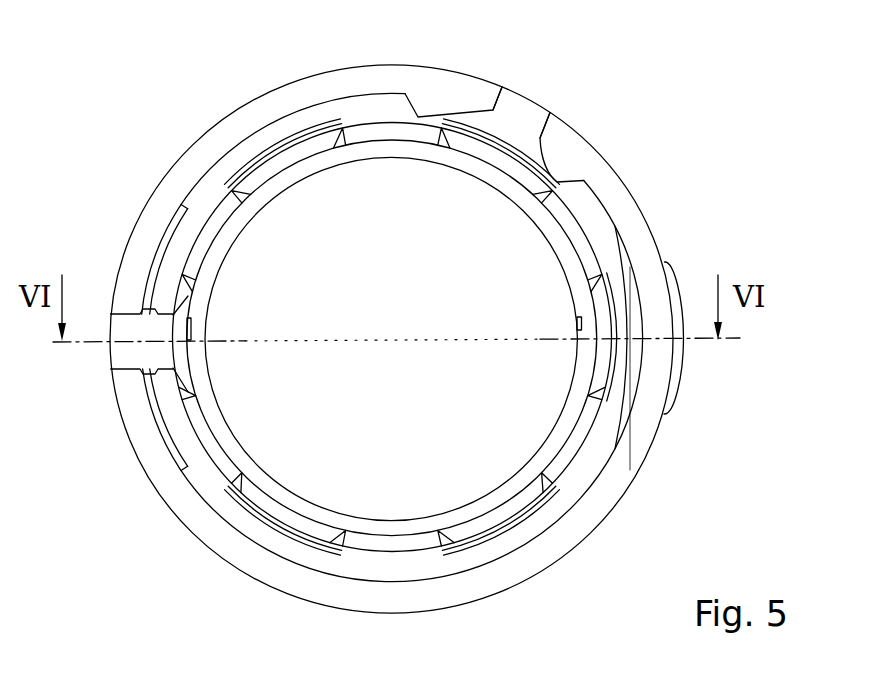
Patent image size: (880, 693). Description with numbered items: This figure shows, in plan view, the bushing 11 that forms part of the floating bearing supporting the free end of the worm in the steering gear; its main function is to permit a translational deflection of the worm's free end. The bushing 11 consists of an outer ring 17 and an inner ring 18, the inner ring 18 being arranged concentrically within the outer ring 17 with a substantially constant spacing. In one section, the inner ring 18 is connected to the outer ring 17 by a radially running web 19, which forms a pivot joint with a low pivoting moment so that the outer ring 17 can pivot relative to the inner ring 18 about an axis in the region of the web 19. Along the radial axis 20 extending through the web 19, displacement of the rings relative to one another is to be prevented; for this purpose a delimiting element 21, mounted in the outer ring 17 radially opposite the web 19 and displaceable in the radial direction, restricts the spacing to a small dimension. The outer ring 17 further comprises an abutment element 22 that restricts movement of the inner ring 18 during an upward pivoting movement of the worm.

The bushing 11 is at (661, 157).
The outer ring 17 is at (637, 233).
The inner ring 18 is at (571, 456).
The web 19 is at (132, 360).
The radial axis 20 is at (82, 353).
The delimiting element 21 is at (678, 357).
The abutment element 22 is at (512, 123).